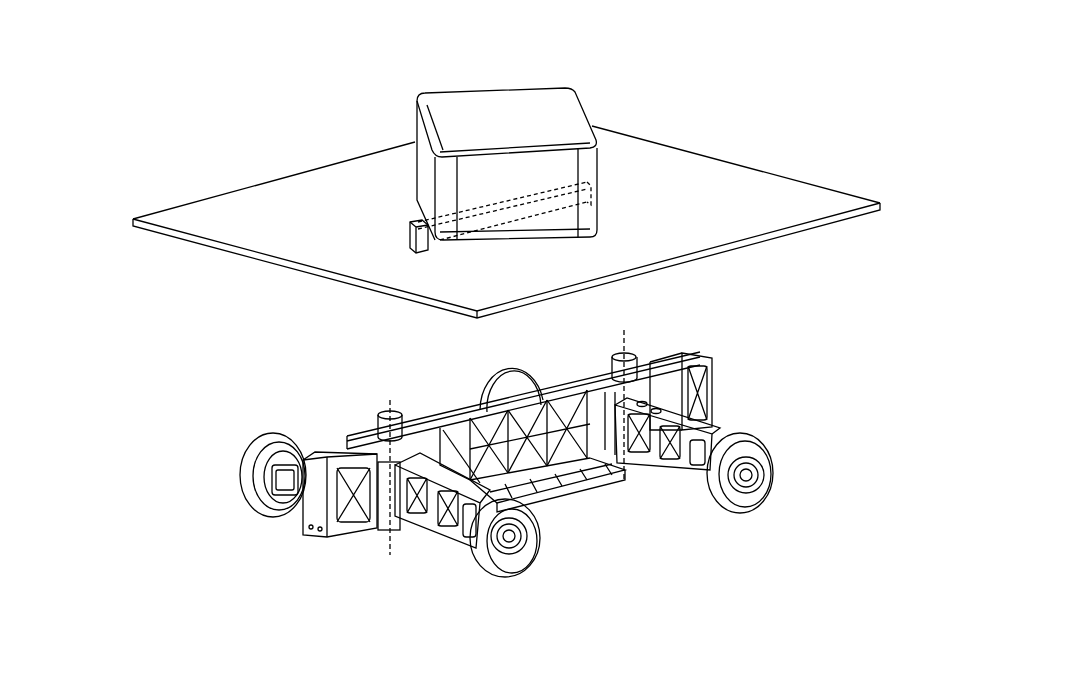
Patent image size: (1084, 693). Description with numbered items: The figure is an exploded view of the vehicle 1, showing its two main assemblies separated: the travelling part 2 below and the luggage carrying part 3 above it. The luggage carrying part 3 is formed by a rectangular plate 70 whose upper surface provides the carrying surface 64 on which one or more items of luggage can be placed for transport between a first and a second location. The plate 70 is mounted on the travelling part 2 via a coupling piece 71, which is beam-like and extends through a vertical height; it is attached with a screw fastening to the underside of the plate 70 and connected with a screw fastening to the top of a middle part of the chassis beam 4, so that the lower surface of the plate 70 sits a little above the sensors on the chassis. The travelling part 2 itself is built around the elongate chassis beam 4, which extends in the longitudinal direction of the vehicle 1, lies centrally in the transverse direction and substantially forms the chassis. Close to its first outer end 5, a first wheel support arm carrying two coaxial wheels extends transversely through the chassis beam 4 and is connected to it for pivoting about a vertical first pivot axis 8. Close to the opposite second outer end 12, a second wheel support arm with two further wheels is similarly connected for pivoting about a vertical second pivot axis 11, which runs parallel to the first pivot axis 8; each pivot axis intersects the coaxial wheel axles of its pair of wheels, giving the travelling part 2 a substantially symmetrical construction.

The vehicle 1 is at (178, 113).
The travelling part 2 is at (215, 480).
The luggage carrying part 3 is at (125, 207).
The chassis beam 4 is at (768, 385).
The first outer end 5 is at (685, 352).
The first pivot axis 8 is at (625, 492).
The second pivot axis 11 is at (394, 555).
The second outer end 12 is at (345, 444).
The carrying surface 64 is at (643, 172).
The plate 70 is at (768, 171).
The coupling piece 71 is at (410, 240).